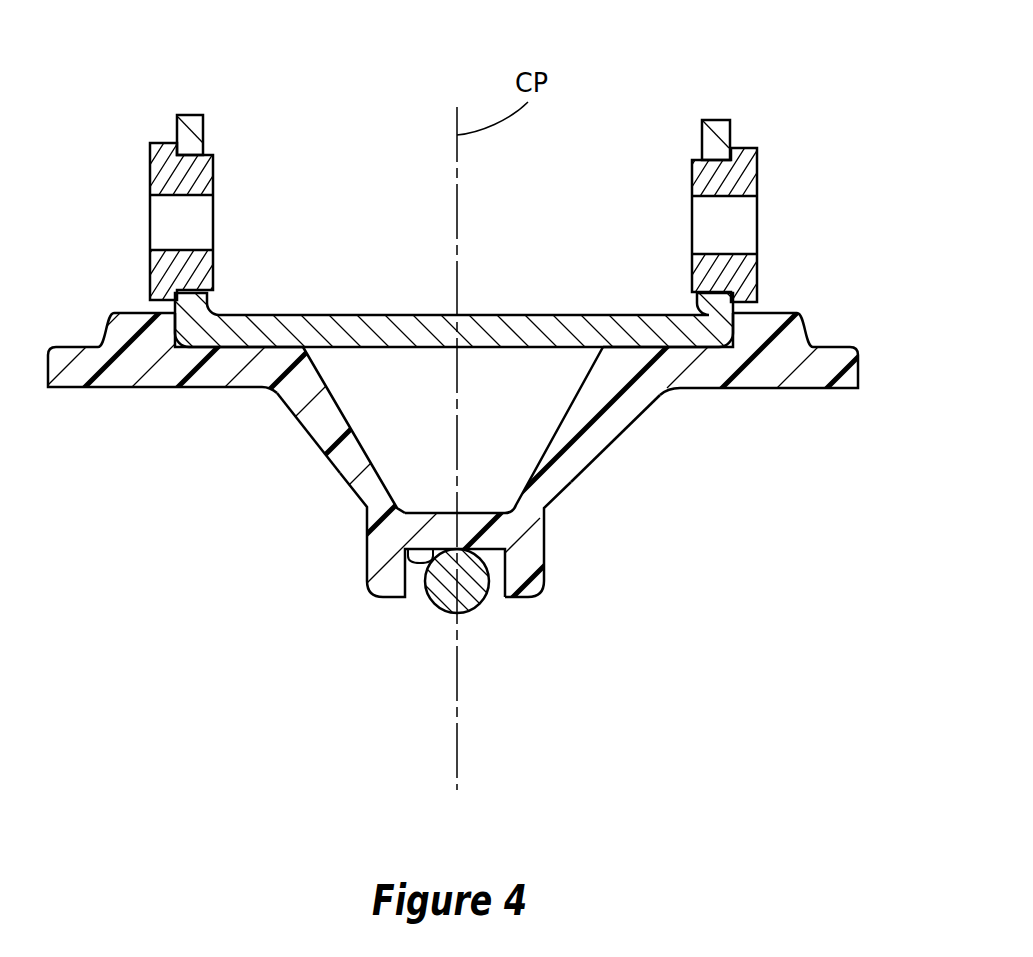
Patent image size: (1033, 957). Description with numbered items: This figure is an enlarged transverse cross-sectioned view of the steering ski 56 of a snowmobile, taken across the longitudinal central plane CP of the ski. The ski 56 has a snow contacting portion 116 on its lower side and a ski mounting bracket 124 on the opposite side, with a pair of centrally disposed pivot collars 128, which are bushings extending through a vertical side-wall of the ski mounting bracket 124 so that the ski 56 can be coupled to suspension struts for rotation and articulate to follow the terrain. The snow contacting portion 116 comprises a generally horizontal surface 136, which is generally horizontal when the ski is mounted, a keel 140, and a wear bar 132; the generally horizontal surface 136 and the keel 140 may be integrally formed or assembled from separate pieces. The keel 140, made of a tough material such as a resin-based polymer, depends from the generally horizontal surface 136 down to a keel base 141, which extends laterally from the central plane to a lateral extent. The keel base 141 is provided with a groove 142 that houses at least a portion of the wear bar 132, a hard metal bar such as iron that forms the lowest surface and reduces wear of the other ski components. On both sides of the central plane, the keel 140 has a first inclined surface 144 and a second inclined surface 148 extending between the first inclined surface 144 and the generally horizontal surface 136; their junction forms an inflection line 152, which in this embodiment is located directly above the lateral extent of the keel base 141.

The steering ski 56 is at (634, 113).
The snow contacting portion 116 is at (221, 594).
The ski mounting bracket 124 is at (412, 322).
The pivot collars 128 is at (150, 187).
The wear bar 132 is at (477, 608).
The generally horizontal surface 136 is at (192, 387).
The keel 140 is at (292, 498).
The keel base 141 is at (517, 595).
The groove 142 is at (431, 549).
The first inclined surface 144 is at (360, 575).
The second inclined surface 148 is at (312, 440).
The inflection line 152 is at (363, 512).